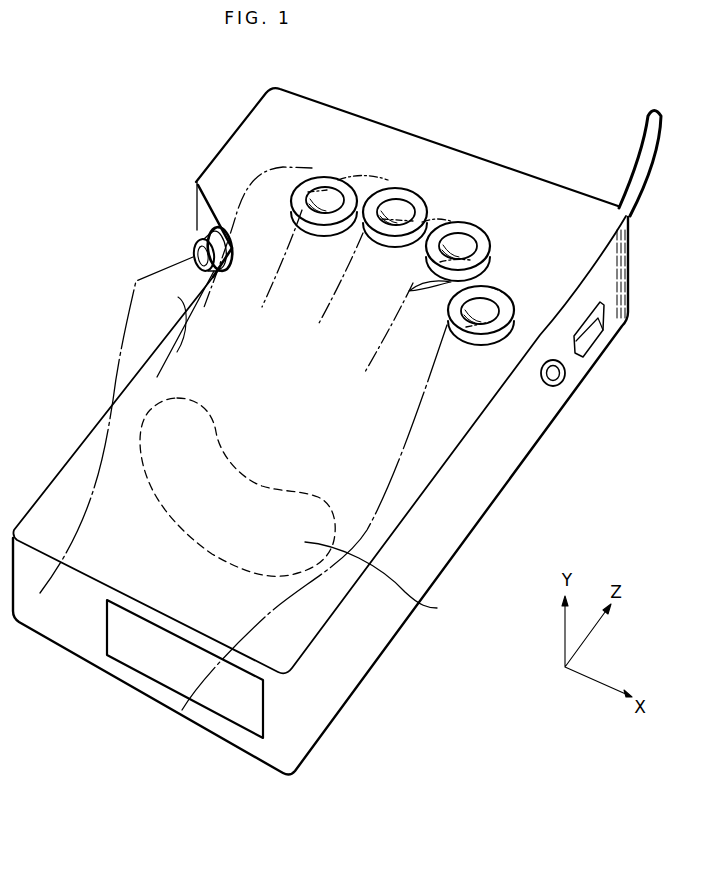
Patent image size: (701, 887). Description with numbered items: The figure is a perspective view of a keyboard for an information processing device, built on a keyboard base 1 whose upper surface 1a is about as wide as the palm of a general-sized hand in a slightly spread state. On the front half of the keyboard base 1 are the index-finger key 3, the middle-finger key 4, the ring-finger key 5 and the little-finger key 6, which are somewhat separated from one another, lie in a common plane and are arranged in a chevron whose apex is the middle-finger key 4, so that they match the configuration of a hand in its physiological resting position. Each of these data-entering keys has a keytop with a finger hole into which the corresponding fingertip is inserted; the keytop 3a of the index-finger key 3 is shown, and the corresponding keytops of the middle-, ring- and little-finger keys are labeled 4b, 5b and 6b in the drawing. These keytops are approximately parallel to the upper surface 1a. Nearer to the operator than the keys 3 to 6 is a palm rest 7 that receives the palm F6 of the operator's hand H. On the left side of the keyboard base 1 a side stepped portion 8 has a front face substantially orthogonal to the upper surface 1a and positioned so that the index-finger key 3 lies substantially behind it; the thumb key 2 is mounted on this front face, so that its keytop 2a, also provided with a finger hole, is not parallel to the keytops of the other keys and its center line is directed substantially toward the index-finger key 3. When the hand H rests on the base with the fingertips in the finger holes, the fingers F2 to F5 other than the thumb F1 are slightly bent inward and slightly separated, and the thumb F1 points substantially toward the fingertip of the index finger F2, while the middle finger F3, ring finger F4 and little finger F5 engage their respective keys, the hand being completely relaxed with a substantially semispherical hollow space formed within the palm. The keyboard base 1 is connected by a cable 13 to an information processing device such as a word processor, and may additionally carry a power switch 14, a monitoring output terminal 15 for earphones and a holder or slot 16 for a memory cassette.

The keyboard base 1 is at (390, 620).
The upper surface 1a is at (420, 473).
The thumb key 2 is at (196, 238).
The keytop of thumb key 2a is at (193, 257).
The index-finger key 3 is at (312, 172).
The keytop of index-finger key 3a is at (327, 200).
The middle-finger key 4 is at (390, 181).
The second key button 4b is at (398, 213).
The ring-finger key 5 is at (462, 218).
The third key button 5b is at (467, 247).
The little-finger key 6 is at (475, 355).
The fourth key button 6b is at (487, 312).
The palm rest 7 is at (379, 581).
The side stepped portion 8 is at (207, 217).
The cable 13 is at (642, 158).
The power switch 14 is at (586, 341).
The monitoring output terminal 15 is at (558, 385).
The holder or slot 16 is at (243, 708).
The hand H is at (112, 385).
The thumb F1 is at (185, 324).
The index finger F2 is at (257, 241).
The middle finger F3 is at (325, 250).
The ring finger F4 is at (385, 279).
The little finger F5 is at (433, 327).
The palm F6 is at (237, 487).